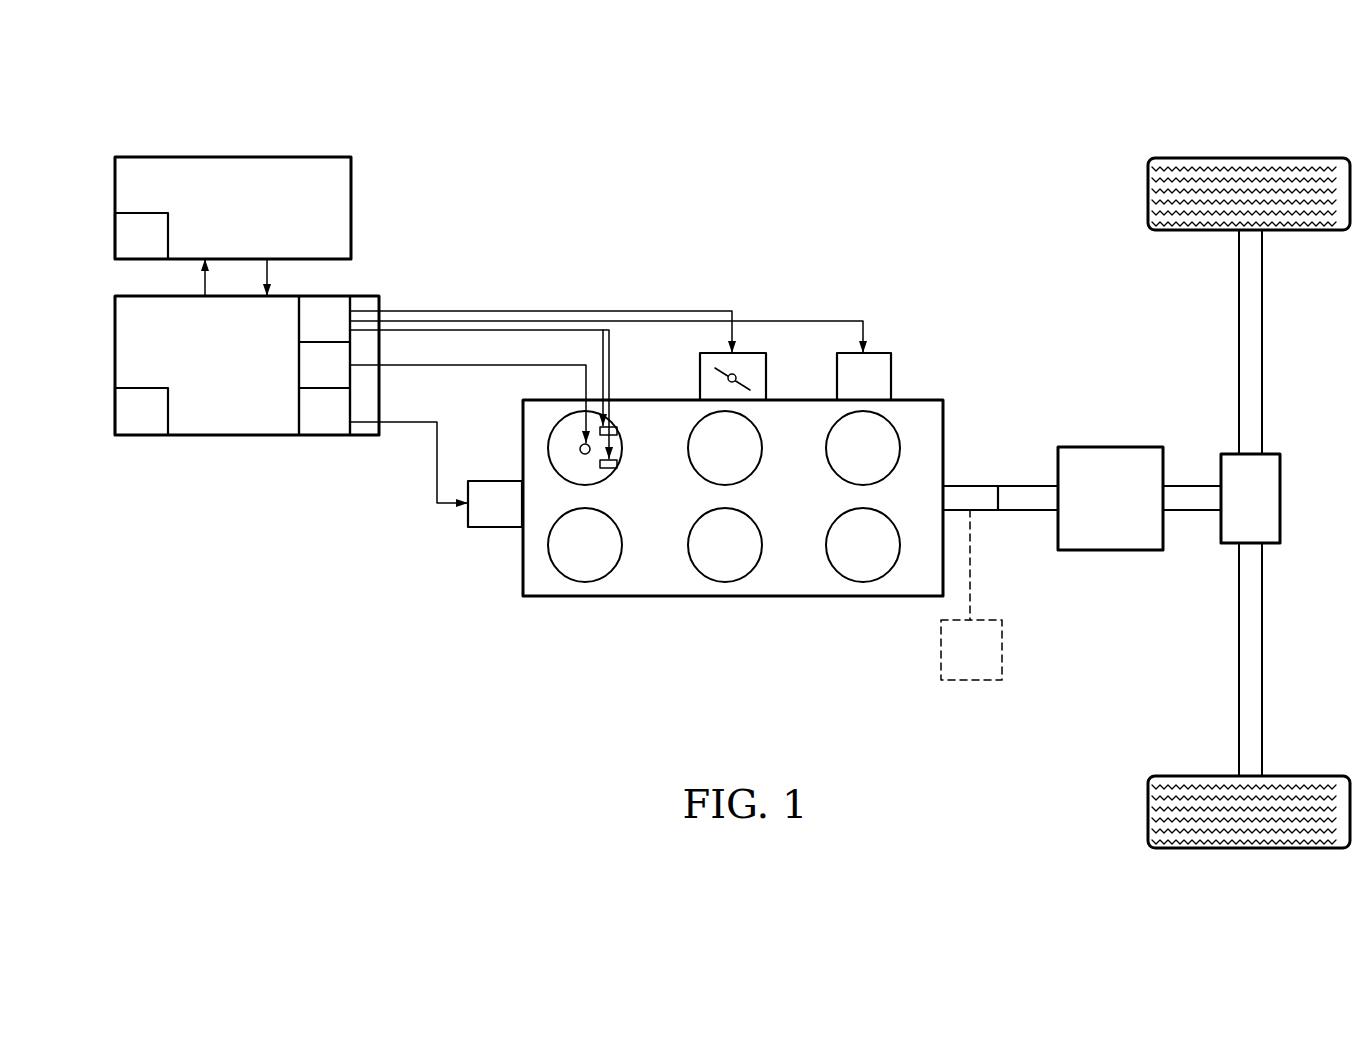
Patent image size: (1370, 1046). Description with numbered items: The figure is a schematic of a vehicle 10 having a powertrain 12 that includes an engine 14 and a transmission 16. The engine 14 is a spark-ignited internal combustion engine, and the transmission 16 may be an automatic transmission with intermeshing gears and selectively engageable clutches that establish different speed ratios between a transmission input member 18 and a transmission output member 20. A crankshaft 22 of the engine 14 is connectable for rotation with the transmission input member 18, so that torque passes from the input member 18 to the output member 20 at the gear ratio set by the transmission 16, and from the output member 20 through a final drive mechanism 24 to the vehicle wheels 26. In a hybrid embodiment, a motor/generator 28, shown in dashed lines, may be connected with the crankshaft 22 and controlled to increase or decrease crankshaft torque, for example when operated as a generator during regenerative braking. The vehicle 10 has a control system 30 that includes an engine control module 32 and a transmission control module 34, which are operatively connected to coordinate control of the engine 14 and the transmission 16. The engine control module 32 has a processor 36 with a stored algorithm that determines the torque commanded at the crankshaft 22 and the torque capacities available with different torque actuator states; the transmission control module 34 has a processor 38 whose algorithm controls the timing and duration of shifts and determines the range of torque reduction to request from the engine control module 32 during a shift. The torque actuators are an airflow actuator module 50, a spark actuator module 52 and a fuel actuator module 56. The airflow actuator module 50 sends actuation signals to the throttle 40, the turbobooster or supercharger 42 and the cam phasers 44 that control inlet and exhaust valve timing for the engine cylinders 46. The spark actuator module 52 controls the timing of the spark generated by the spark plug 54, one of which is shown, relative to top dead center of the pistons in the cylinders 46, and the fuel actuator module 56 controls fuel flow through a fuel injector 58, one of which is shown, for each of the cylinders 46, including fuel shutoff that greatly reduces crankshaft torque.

The vehicle 10 is at (1027, 108).
The powertrain 12 is at (708, 615).
The engine 14 is at (784, 505).
The transmission 16 is at (1097, 508).
The transmission input member 18 is at (1028, 486).
The transmission output member 20 is at (1192, 486).
The crankshaft 22 is at (960, 486).
The final drive mechanism 24 is at (1269, 454).
The vehicle wheels 26 is at (1248, 158).
The motor/generator 28 is at (958, 662).
The control system 30 is at (203, 460).
The engine control module (ECM) 32 is at (219, 376).
The transmission control module (TCM) 34 is at (243, 220).
The processor 36 is at (128, 423).
The processor 38 is at (128, 249).
The throttle 40 is at (767, 377).
The turbobooster or supercharger 42 is at (851, 388).
The cam phasers 44 is at (617, 432).
The engine cylinders 46 is at (553, 460).
The airflow actuator module 50 is at (312, 331).
The spark actuator module 52 is at (312, 377).
The spark plug 54 is at (585, 455).
The fuel actuator module 56 is at (312, 423).
The fuel injector 58 is at (482, 515).